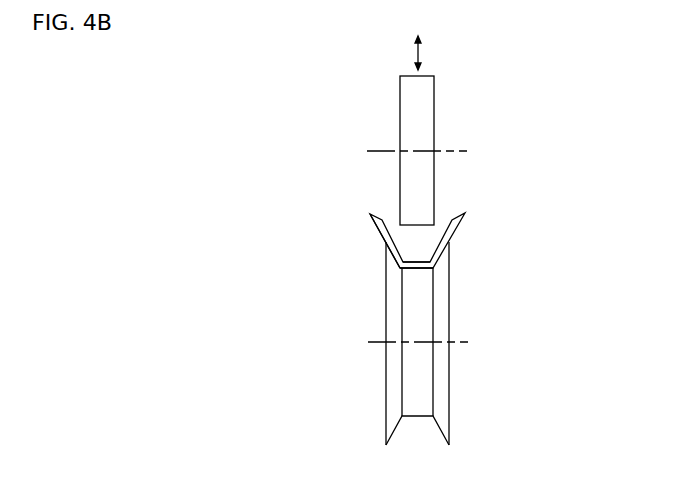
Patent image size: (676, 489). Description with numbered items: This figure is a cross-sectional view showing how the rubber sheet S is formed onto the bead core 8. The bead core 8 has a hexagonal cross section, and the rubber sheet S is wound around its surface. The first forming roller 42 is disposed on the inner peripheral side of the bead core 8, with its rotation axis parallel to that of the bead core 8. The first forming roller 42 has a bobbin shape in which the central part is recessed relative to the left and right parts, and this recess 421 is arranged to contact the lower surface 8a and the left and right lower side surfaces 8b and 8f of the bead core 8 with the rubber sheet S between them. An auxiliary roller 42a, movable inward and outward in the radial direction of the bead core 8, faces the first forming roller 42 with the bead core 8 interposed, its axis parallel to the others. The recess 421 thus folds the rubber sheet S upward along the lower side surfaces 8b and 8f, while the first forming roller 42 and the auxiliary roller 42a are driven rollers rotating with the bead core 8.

The auxiliary roller 42a is at (434, 114).
The bead core 8 is at (417, 245).
The rubber sheet S is at (378, 230).
The lower side surface 8b is at (397, 258).
The lower side surface 8f is at (425, 264).
The lower surface 8a is at (433, 268).
The first forming roller 42 is at (449, 335).
The recess 421 is at (395, 432).